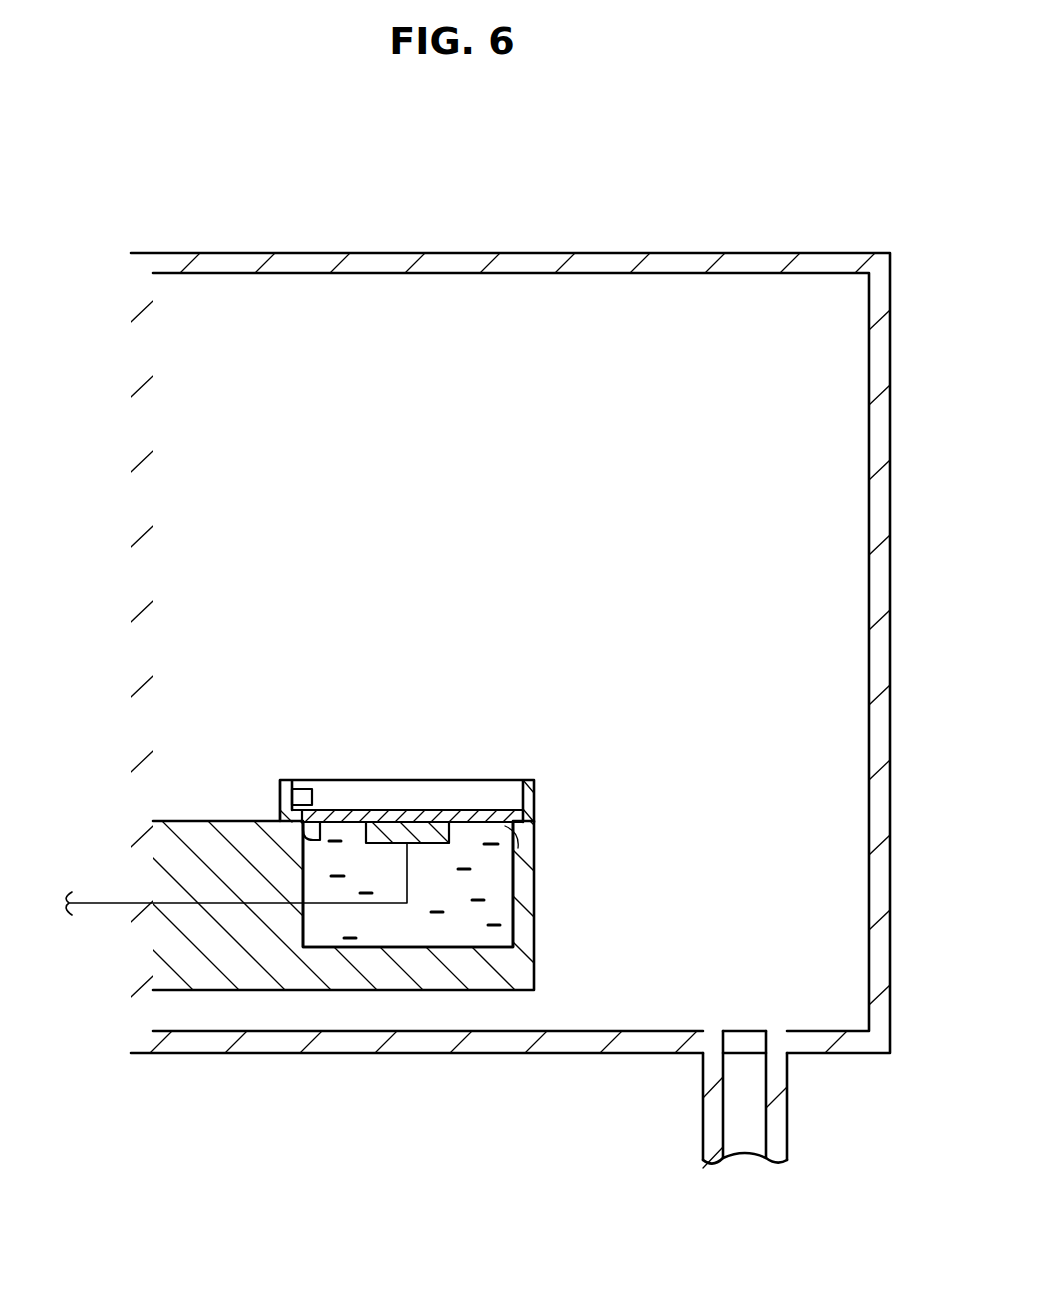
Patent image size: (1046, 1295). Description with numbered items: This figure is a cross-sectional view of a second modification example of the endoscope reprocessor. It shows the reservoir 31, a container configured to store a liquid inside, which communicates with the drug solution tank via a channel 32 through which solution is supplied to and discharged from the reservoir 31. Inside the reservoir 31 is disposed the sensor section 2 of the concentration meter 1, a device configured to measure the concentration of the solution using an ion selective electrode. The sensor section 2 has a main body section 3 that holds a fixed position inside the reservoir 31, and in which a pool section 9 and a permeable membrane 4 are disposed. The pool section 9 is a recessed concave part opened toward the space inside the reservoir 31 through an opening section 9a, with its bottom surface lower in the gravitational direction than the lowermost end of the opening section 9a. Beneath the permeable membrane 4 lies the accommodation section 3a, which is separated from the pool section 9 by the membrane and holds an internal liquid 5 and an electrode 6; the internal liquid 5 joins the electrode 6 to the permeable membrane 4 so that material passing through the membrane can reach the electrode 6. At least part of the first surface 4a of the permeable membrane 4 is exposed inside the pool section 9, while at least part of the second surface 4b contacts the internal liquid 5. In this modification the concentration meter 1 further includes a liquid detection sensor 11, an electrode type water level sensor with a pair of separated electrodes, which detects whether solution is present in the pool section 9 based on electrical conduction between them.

The concentration meter 1 is at (199, 710).
The sensor section 2 is at (596, 863).
The main body section 3 is at (534, 962).
The accommodation section 3a is at (535, 850).
The permeable membrane 4 is at (535, 818).
The first surface 4a is at (365, 812).
The second surface 4b is at (292, 840).
The internal liquid 5 is at (493, 913).
The electrode 6 is at (450, 843).
The pool section 9 is at (510, 805).
The opening section 9a is at (515, 781).
The liquid detection sensor 11 is at (296, 786).
The reservoir 31 is at (510, 252).
The channel 32 is at (703, 1146).